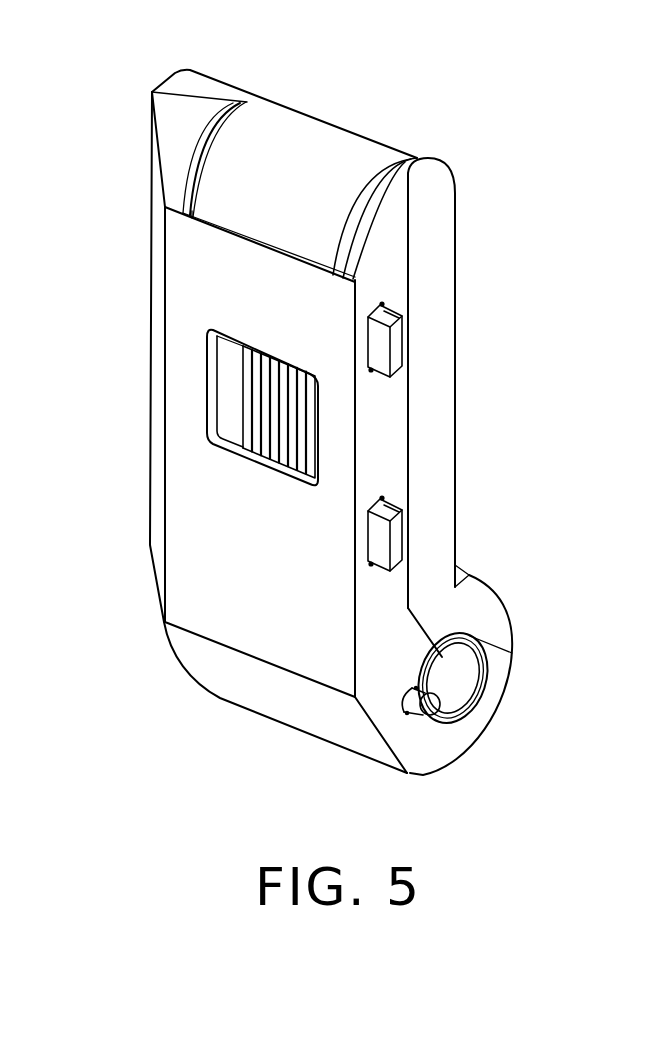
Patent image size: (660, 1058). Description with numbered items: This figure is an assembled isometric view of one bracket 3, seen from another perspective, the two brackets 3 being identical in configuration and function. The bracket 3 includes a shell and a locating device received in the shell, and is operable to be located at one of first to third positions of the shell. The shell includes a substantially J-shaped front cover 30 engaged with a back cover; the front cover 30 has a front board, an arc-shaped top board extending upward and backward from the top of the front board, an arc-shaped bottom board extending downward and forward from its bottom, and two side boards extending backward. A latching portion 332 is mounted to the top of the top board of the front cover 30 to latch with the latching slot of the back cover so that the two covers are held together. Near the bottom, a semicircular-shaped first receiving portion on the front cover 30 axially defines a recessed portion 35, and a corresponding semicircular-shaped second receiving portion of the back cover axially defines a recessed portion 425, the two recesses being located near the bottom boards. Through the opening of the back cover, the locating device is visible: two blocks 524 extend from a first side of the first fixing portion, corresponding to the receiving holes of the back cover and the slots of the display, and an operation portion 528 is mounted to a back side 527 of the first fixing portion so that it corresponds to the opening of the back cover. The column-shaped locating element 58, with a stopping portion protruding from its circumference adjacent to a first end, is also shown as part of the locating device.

The bracket 3 is at (510, 102).
The front cover 30 is at (428, 267).
The latching portion 332 is at (262, 177).
The blocks 524 is at (380, 352).
The back side 527 is at (230, 370).
The operation portion 528 is at (273, 427).
The recessed portion 35 is at (458, 650).
The recessed portion 425 is at (448, 683).
The locating element 58 is at (428, 712).